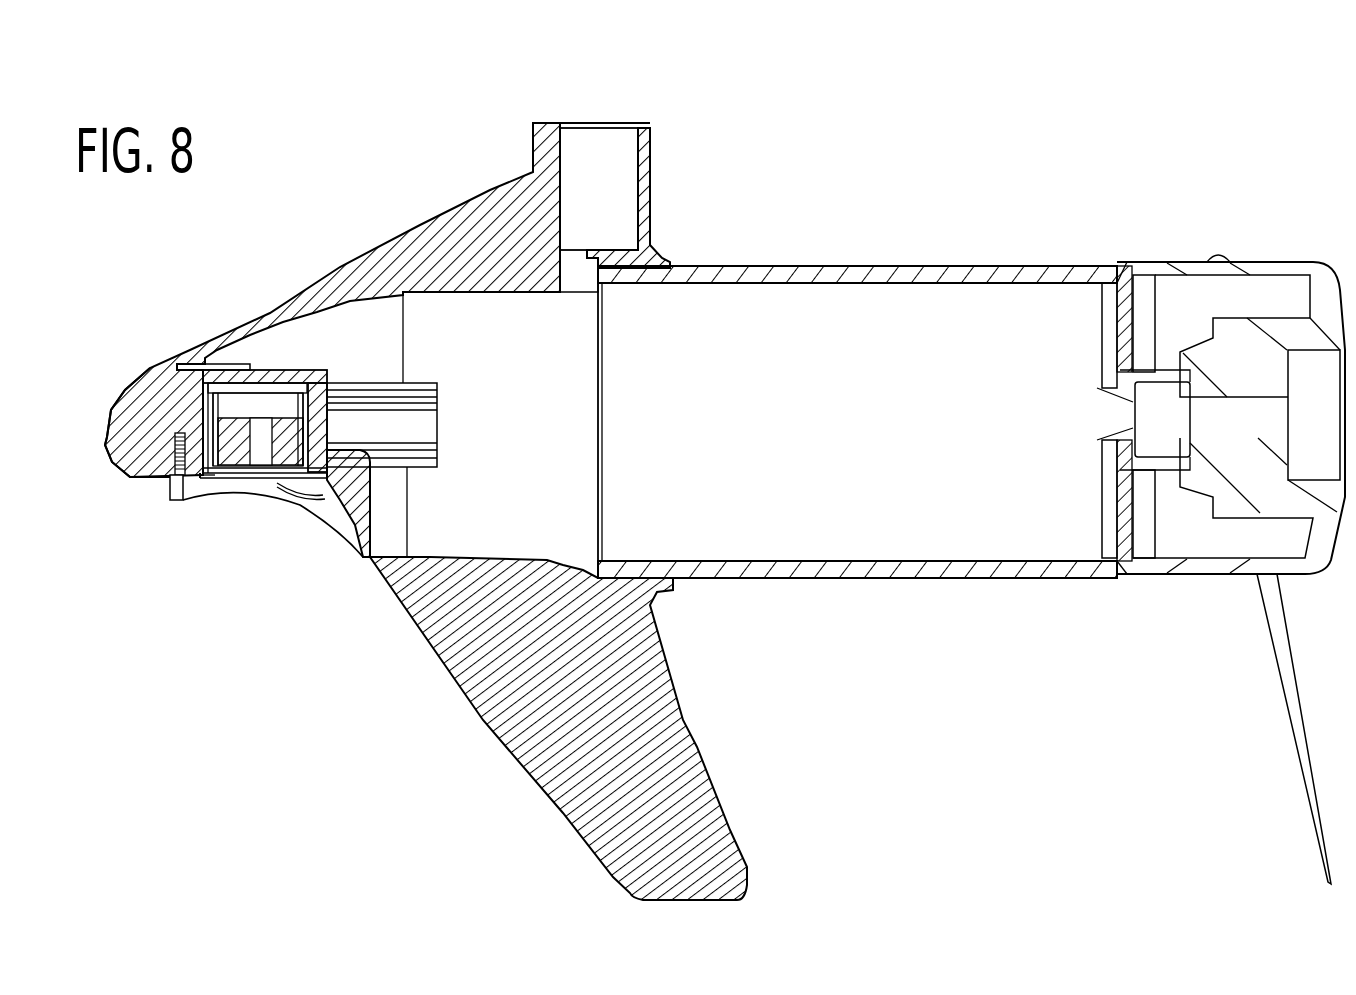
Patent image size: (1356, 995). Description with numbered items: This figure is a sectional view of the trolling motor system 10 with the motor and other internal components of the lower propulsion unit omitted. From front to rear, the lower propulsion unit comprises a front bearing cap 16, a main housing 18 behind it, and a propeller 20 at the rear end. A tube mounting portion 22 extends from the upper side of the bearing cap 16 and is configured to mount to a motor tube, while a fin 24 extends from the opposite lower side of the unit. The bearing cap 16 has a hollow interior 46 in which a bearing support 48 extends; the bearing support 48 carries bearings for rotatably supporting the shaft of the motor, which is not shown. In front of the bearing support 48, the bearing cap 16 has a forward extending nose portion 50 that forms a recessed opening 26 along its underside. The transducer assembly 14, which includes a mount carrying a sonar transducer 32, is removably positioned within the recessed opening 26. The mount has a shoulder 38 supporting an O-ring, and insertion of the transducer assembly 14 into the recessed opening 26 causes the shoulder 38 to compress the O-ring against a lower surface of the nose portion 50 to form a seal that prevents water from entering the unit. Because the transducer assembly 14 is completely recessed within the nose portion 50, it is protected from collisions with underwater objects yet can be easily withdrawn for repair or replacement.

The trolling motor system 10 is at (956, 126).
The transducer assembly 14 is at (225, 481).
The front bearing cap 16 is at (336, 260).
The main housing 18 is at (847, 259).
The propeller 20 is at (1282, 268).
The tube mounting portion 22 is at (652, 178).
The fin 24 is at (690, 760).
The recessed opening 26 is at (200, 403).
The sonar transducer 32 is at (277, 440).
The shoulder 38 is at (205, 479).
The hollow interior 46 is at (283, 340).
The bearing support 48 is at (428, 403).
The nose portion 50 is at (132, 386).